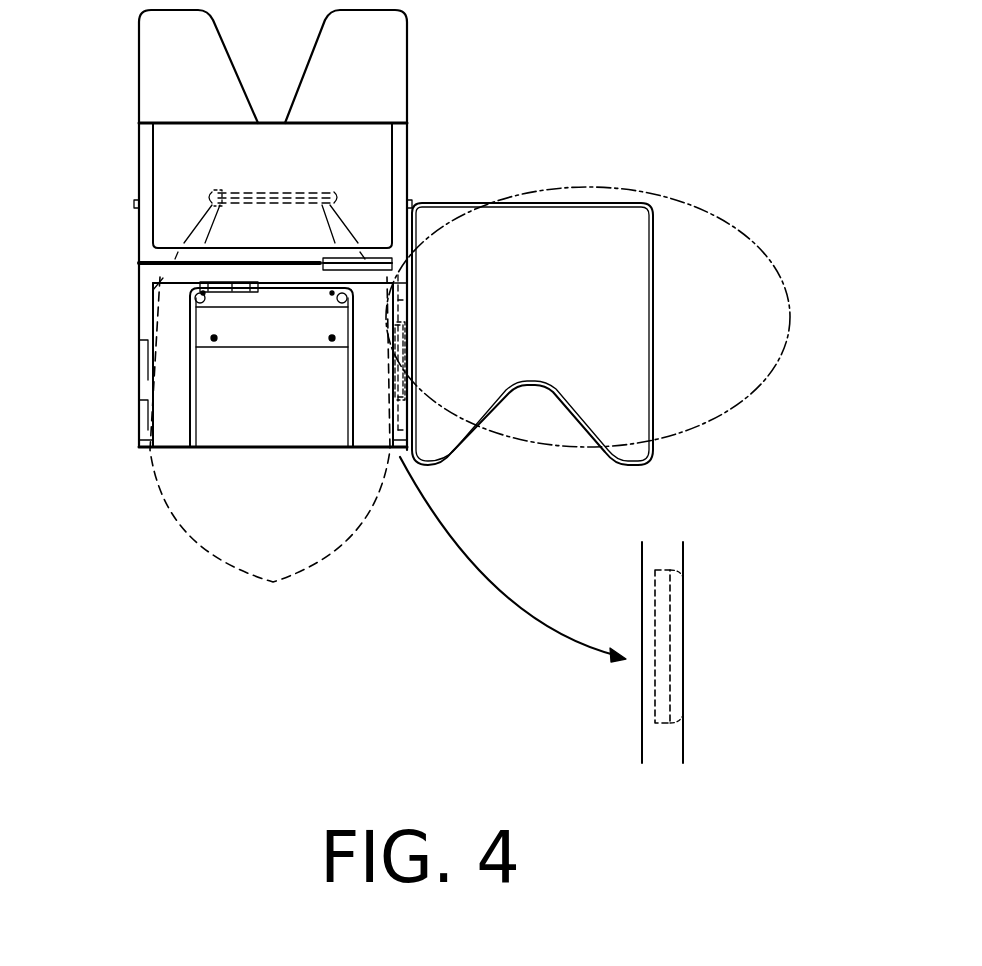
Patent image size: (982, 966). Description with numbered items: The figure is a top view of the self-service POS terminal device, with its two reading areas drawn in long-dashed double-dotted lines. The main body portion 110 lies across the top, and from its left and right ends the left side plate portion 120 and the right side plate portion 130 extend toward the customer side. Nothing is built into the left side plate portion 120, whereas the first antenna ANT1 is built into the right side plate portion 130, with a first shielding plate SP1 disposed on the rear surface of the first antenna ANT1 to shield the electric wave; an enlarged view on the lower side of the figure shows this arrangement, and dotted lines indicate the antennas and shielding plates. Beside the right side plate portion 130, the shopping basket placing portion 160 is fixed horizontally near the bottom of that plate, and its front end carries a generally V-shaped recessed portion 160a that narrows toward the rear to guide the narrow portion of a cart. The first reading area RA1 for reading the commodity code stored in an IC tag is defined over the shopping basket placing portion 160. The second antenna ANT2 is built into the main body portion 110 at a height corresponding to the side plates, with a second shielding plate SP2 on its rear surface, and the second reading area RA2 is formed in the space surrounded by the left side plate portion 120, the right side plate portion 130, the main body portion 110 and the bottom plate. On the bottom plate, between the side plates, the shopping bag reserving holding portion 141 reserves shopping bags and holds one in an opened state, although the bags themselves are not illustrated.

The main body portion 110 is at (137, 223).
The left side plate portion 120 is at (150, 318).
The right side plate portion 130 is at (400, 303).
The shopping bag reserving holding portion 141 is at (332, 340).
The shopping basket placing portion 160 is at (596, 203).
The recessed portion 160a is at (563, 400).
The first antenna ANT1 is at (420, 327).
The second antenna ANT2 is at (248, 200).
The first shielding plate SP1 is at (393, 430).
The second shielding plate SP2 is at (232, 192).
The first reading area RA1 is at (740, 233).
The second reading area RA2 is at (210, 557).